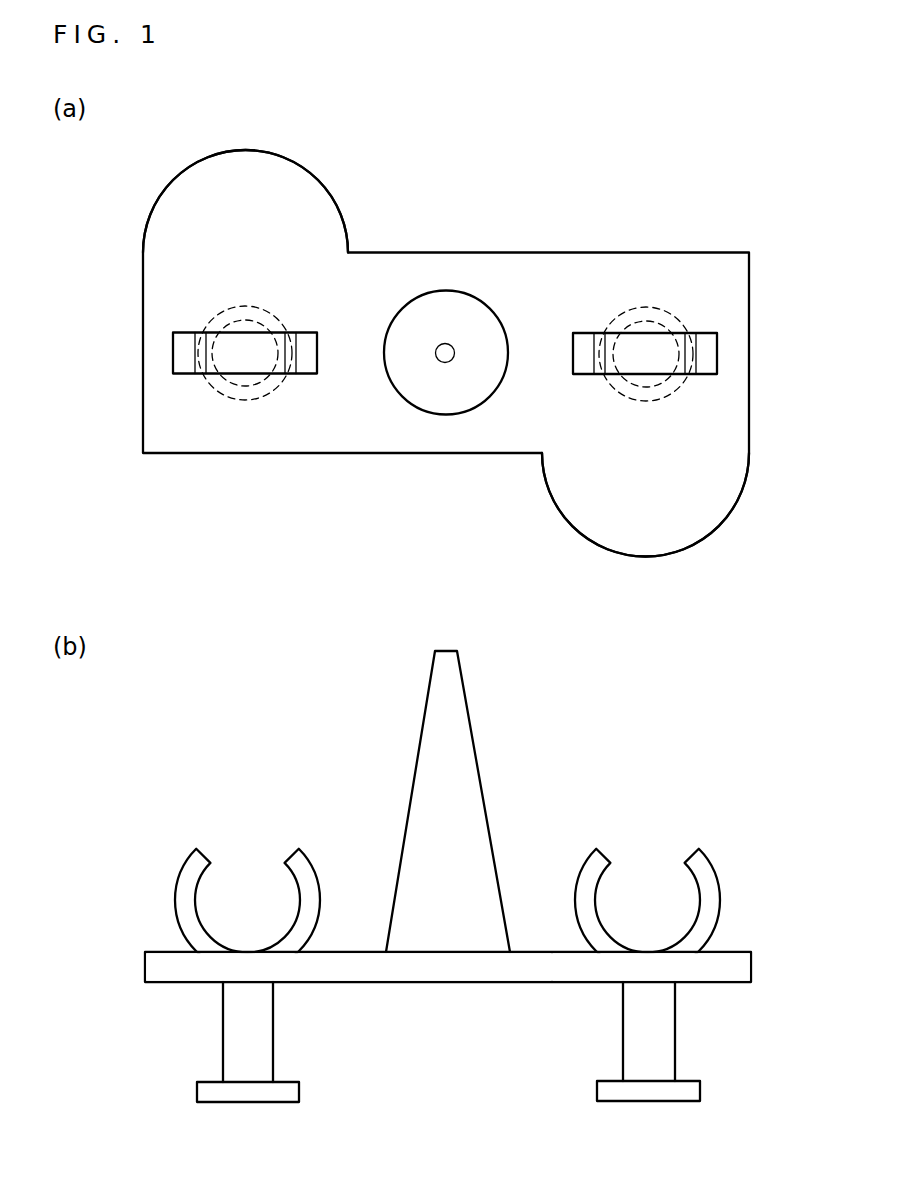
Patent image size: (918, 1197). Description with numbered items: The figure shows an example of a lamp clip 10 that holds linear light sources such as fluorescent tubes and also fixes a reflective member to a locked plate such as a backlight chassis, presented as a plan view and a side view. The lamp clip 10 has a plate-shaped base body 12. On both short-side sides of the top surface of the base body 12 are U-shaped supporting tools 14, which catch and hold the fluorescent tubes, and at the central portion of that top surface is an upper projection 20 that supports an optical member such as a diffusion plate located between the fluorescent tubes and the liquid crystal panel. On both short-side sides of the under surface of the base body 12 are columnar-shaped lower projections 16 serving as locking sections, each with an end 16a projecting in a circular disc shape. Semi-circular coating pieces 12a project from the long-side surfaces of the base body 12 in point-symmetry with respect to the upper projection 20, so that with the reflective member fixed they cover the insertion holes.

The lamp clip 10 is at (667, 196).
The base body 12 is at (749, 425).
The coating pieces 12a is at (293, 178).
The supporting tools 14 is at (173, 352).
The lower projections 16 is at (232, 386).
The foot of support leg 16a is at (286, 388).
The upper projection 20 is at (458, 308).